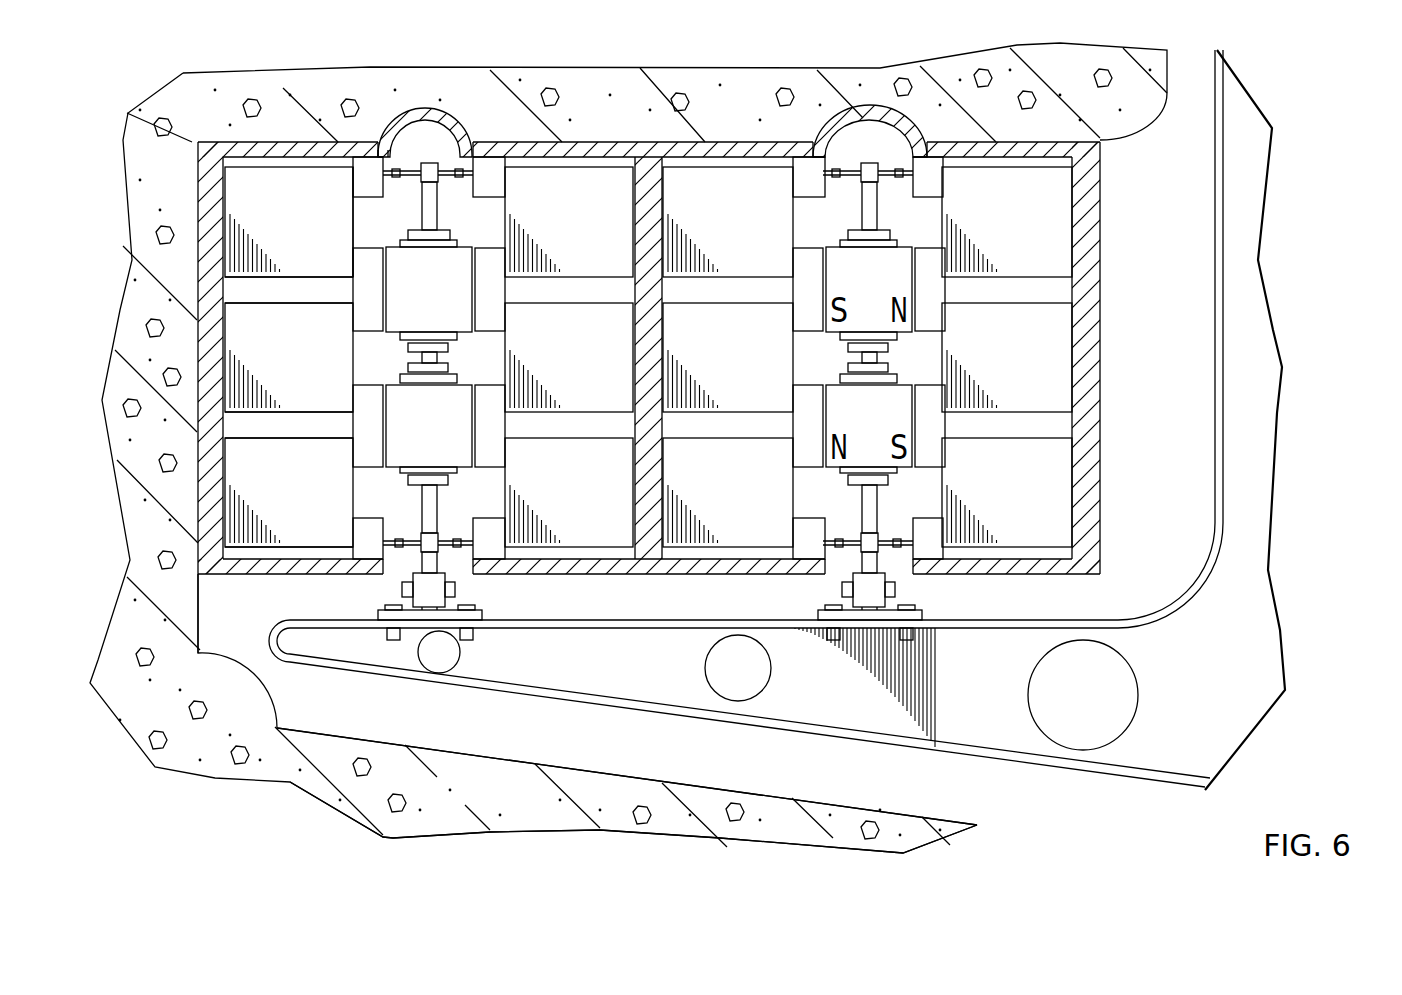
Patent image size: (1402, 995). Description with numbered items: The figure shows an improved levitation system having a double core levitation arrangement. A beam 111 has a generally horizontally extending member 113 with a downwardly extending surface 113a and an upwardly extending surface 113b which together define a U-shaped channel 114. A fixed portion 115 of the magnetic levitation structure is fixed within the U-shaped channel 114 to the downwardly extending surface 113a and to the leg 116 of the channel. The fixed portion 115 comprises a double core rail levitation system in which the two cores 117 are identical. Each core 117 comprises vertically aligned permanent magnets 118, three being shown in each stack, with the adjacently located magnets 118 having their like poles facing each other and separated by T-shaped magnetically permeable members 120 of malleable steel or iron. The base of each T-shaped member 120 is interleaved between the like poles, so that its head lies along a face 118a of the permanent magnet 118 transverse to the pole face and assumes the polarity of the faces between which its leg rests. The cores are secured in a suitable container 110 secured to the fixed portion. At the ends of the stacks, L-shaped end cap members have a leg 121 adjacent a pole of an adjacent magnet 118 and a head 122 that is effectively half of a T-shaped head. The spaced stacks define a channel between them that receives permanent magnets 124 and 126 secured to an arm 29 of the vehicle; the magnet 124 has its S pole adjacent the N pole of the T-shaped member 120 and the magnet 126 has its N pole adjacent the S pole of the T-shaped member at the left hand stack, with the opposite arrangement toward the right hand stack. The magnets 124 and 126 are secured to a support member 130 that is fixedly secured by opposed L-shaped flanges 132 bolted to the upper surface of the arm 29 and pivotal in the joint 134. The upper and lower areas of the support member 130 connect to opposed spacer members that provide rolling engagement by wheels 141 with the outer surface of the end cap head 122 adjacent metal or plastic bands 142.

The arm of the vehicle 29 is at (633, 684).
The container 110 is at (210, 478).
The beam 111 is at (423, 793).
The generally horizontally extending member 113 is at (1102, 142).
The downwardly extending surface 113a is at (200, 618).
The upwardly extending surface 113b is at (602, 773).
The U-shaped channel 114 is at (234, 697).
The fixed portion 115 is at (1137, 470).
The leg of the channel 116 is at (197, 350).
The core 117 is at (1016, 588).
The permanent magnet 118 is at (280, 472).
The face of the permanent magnet 118a is at (363, 222).
The T-shaped magnetically permeable member 120 is at (337, 292).
The leg of end cap member 121 is at (297, 555).
The head of end cap member 122 is at (375, 520).
The permanent magnet 124 is at (406, 280).
The permanent magnet 126 is at (408, 415).
The support member 130 is at (438, 510).
The L-shaped flange 132 is at (410, 615).
The joint 134 is at (438, 583).
The wheel 141 is at (386, 135).
The band 142 is at (448, 140).